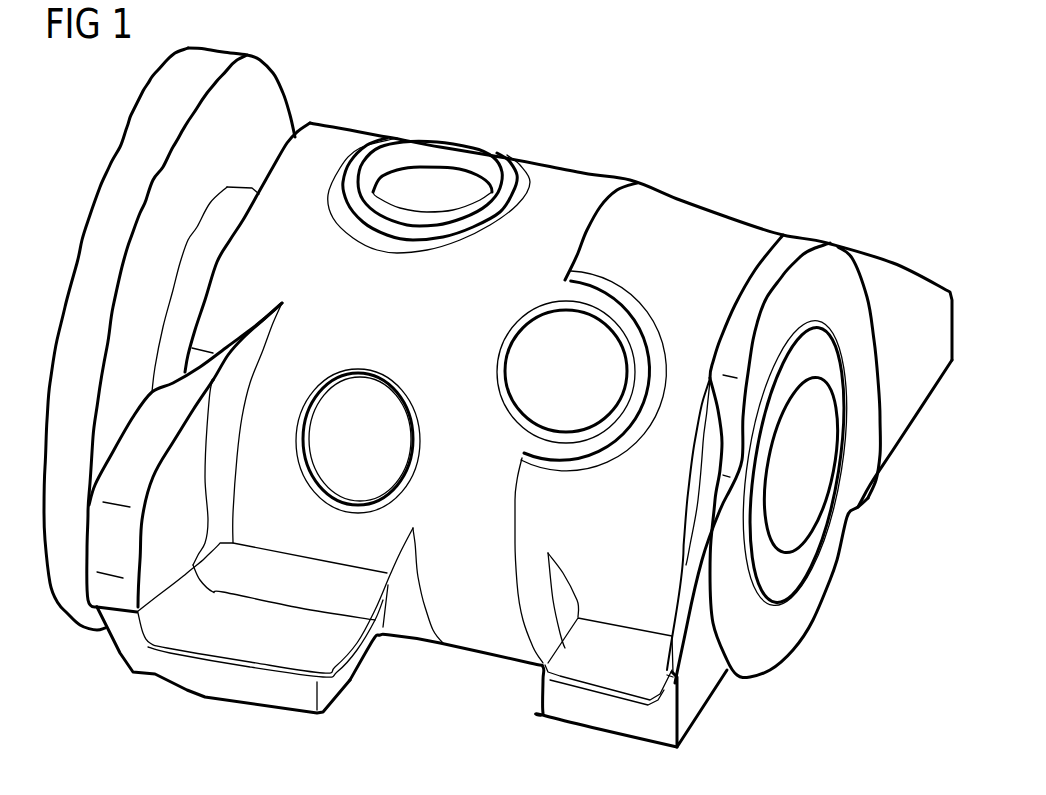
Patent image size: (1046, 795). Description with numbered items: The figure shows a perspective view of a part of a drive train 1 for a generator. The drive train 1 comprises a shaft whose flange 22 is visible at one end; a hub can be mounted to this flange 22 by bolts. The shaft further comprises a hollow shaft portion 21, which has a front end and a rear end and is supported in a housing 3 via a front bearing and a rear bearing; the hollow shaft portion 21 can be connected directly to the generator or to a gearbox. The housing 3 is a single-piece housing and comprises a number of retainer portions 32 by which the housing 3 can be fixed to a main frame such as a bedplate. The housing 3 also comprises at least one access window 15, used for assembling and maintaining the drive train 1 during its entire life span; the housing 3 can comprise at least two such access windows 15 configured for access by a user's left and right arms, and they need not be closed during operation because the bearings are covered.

The drive train 1 is at (801, 136).
The housing 3 is at (568, 182).
The access window 15 is at (537, 337).
The hollow shaft portion 21 is at (793, 530).
The flange 22 is at (120, 155).
The retainer portion 32 is at (217, 640).